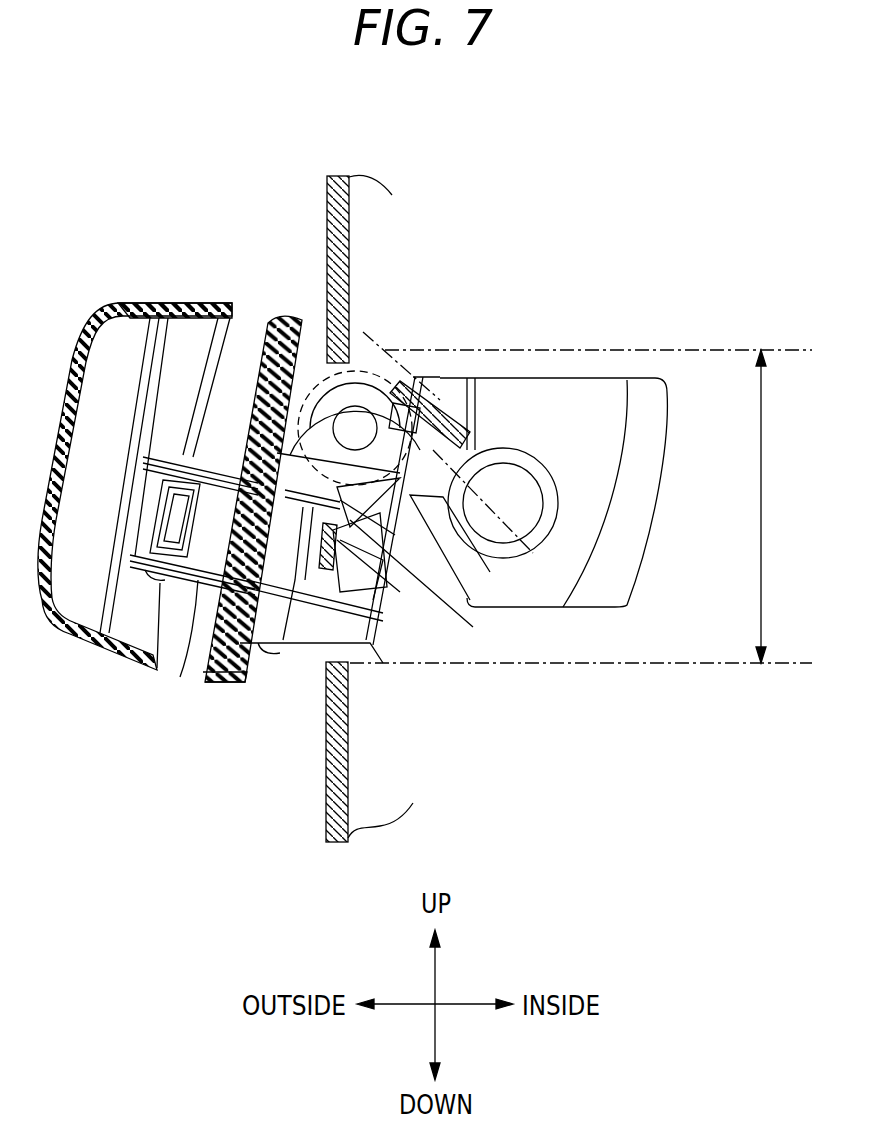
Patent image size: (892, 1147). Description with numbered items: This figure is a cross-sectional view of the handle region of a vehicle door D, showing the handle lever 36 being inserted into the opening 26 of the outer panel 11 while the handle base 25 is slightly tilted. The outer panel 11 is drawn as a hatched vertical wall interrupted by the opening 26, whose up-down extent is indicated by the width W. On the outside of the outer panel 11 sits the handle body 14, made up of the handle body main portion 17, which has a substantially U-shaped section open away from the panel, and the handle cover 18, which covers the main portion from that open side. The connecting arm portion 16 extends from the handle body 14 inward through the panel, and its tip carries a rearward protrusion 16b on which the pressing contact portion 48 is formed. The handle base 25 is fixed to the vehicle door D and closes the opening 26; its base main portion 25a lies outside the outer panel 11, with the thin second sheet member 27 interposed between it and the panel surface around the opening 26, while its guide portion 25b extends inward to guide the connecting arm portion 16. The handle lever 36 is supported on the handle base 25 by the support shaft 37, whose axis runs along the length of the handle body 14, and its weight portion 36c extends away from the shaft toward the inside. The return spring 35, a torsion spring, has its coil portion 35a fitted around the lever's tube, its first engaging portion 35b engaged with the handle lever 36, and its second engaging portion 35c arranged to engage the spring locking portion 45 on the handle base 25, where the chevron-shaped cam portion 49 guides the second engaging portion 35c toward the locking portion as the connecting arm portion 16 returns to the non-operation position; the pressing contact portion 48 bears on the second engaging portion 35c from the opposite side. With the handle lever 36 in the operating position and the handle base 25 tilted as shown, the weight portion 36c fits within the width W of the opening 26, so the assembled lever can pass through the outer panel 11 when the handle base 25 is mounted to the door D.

The outer panel 11 is at (330, 244).
The handle body 14 is at (182, 223).
The connecting arm portion 16 is at (180, 677).
The protrusion 16b is at (315, 577).
The handle body main portion 17 is at (148, 323).
The handle cover 18 is at (87, 330).
The handle base 25 is at (240, 425).
The base main portion 25a is at (212, 683).
The guide portion 25b is at (370, 645).
The opening 26 is at (353, 348).
The second sheet member 27 is at (347, 264).
The return spring 35 is at (290, 342).
The coil portion 35a is at (507, 517).
The first engaging portion 35b is at (467, 447).
The second engaging portion 35c is at (387, 590).
The handle lever 36 is at (646, 578).
The weight portion 36c is at (660, 487).
The support shaft 37 is at (368, 419).
The spring locking portion 45 is at (471, 551).
The pressing contact portion 48 is at (433, 598).
The cam portion 49 is at (390, 522).
The vehicle door D is at (322, 214).
The width W is at (581, 506).